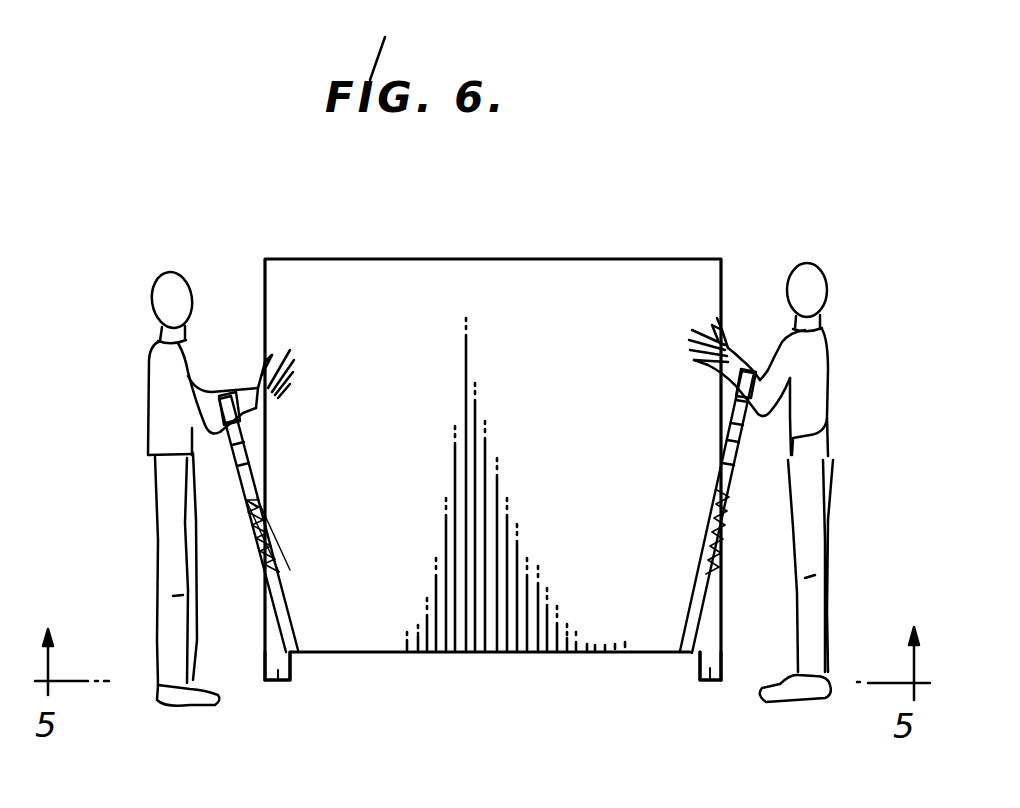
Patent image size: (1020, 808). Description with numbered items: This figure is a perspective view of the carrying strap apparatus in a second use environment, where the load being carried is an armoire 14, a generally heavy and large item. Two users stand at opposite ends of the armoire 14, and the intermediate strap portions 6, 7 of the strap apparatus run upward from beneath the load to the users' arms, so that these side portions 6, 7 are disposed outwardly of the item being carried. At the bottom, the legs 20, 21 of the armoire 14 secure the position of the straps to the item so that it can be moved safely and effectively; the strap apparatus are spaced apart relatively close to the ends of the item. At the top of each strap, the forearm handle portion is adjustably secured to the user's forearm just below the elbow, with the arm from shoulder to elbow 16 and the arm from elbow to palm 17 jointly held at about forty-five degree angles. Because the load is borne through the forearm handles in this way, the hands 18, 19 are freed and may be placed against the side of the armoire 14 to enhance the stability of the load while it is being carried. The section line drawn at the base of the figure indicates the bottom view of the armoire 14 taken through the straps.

The intermediate strap portion 6 is at (258, 525).
The intermediate strap portion 7 is at (730, 492).
The armoire 14 is at (549, 258).
The arm from shoulder to elbow 16 is at (790, 378).
The arm from elbow to palm 17 is at (270, 402).
The hand 18 is at (726, 346).
The hand 19 is at (261, 366).
The leg 20 is at (278, 681).
The leg 21 is at (708, 681).